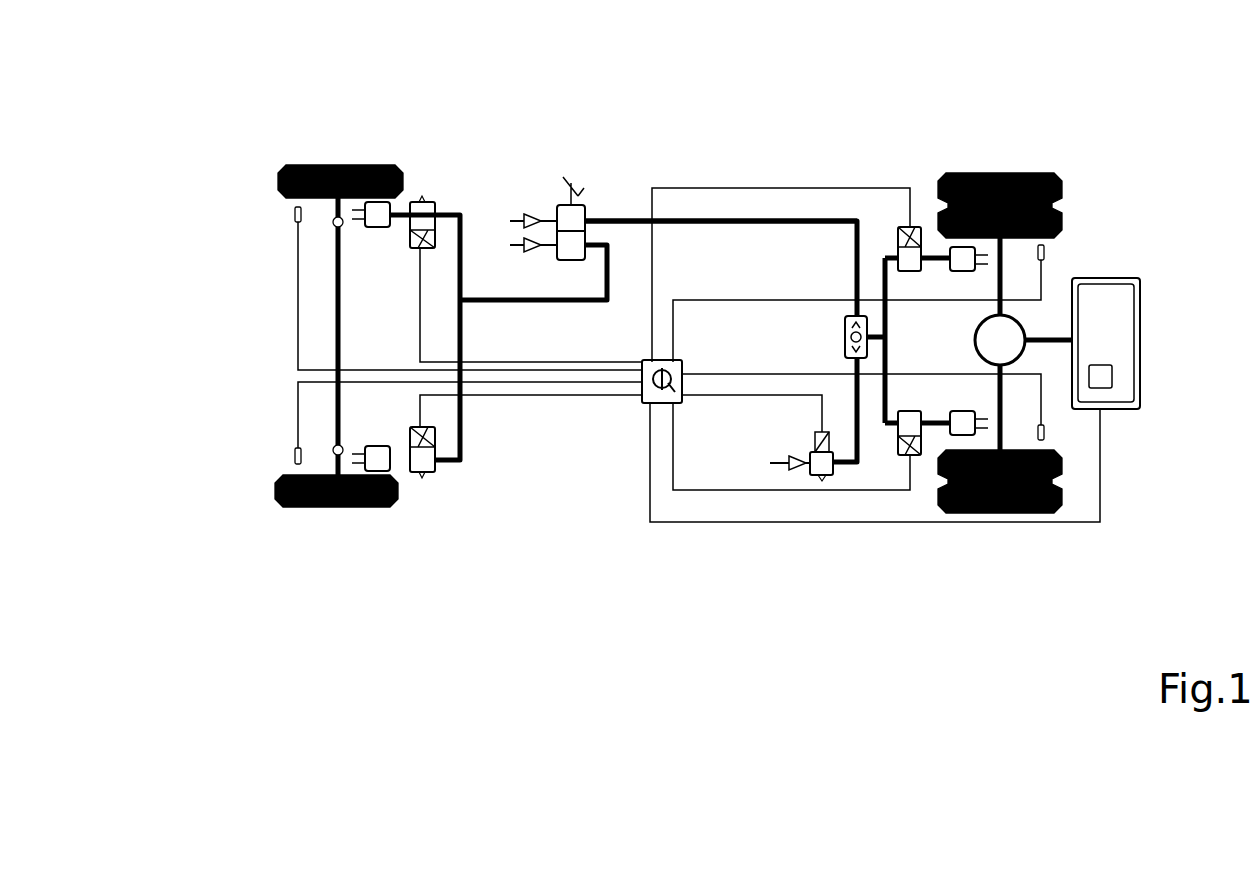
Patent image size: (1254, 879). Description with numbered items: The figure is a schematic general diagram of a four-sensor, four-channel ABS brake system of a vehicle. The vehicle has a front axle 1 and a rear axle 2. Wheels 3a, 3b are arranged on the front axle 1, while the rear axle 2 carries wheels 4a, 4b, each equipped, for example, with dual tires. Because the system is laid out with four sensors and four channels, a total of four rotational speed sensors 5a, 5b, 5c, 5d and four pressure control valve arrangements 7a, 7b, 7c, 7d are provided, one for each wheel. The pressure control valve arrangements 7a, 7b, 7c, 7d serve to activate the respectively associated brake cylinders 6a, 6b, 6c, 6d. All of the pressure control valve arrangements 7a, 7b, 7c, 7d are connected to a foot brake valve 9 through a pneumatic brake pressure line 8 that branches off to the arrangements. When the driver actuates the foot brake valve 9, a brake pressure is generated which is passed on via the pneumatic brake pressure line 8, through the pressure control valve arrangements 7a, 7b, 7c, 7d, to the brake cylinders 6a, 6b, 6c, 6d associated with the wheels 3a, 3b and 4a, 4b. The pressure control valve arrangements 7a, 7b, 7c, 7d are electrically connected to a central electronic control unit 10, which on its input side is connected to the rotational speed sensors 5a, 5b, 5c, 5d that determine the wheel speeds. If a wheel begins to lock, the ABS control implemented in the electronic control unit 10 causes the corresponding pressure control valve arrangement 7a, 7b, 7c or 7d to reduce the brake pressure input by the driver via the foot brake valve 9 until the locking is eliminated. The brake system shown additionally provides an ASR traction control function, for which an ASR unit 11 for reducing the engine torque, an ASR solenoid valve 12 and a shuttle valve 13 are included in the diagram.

The front axle 1 is at (340, 150).
The rear axle 2 is at (1012, 150).
The wheel 3a is at (278, 180).
The wheel 3b is at (275, 491).
The wheel 4a is at (1062, 183).
The wheel 4b is at (1062, 496).
The rotational speed sensor 5a is at (295, 214).
The rotational speed sensor 5b is at (295, 457).
The rotational speed sensor 5c is at (1045, 250).
The rotational speed sensor 5d is at (1046, 435).
The brake cylinder 6a is at (375, 228).
The brake cylinder 6b is at (376, 446).
The brake cylinder 6c is at (960, 271).
The brake cylinder 6d is at (962, 411).
The pressure control valve arrangement 7a is at (412, 250).
The pressure control valve arrangement 7b is at (413, 430).
The pressure control valve arrangement 7c is at (910, 271).
The pressure control valve arrangement 7d is at (912, 411).
The pneumatic brake pressure line 8 is at (742, 221).
The foot brake valve 9 is at (562, 215).
The electronic control unit 10 is at (652, 398).
The ASR unit 11 is at (1113, 345).
The ASR solenoid valve 12 is at (820, 466).
The shuttle valve 13 is at (845, 345).